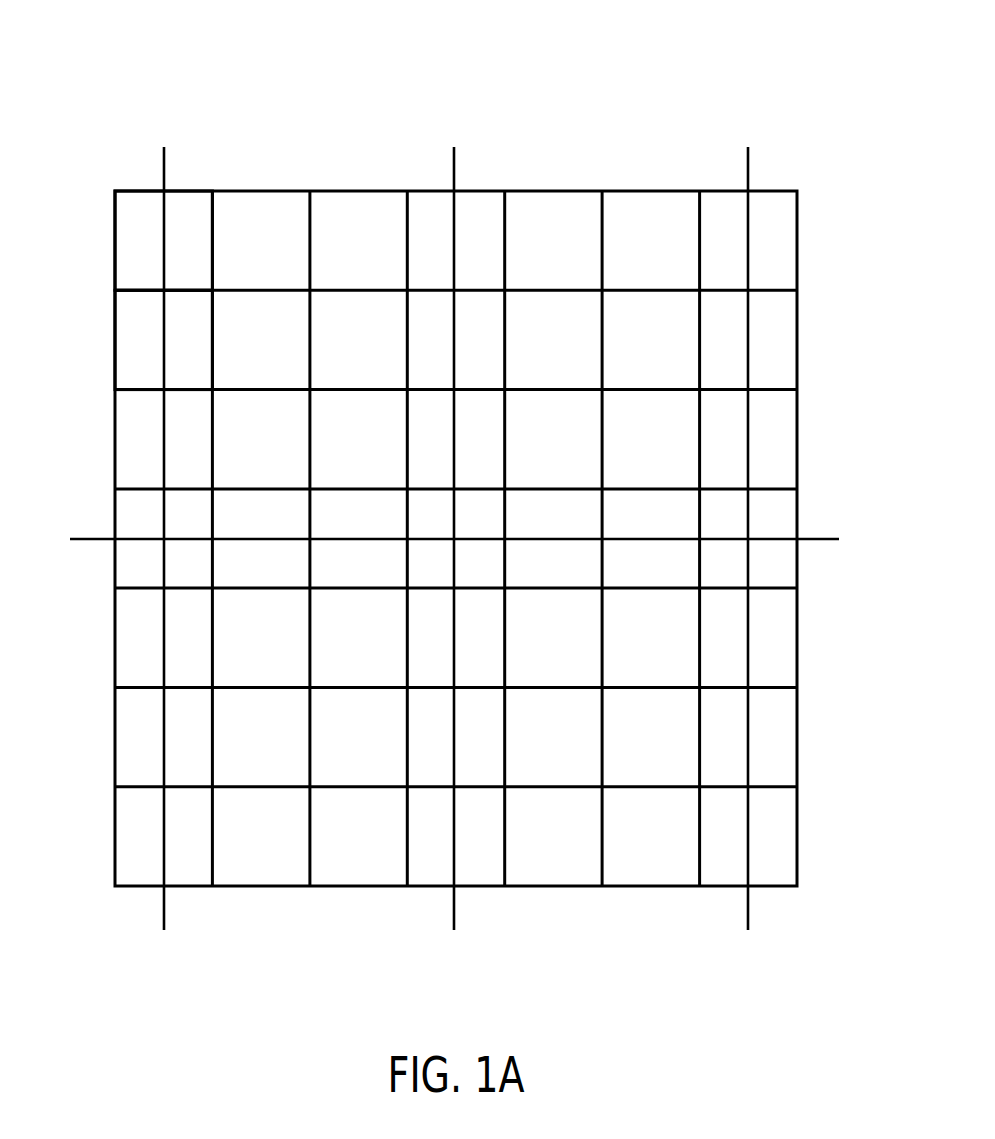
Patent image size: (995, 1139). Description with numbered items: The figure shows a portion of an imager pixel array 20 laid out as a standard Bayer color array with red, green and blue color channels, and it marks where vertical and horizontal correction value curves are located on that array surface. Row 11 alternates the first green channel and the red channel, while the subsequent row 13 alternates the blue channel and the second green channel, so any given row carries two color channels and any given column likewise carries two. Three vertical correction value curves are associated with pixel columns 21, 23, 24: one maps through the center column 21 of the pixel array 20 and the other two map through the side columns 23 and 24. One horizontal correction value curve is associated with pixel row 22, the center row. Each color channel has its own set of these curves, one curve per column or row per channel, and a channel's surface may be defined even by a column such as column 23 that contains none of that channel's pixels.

The imager pixel array 20 is at (827, 107).
The row 11 is at (127, 243).
The subsequent row 13 is at (127, 341).
The center column 21 is at (454, 515).
The pixel row 22 is at (431, 538).
The pixel column 23 is at (164, 515).
The pixel column 24 is at (748, 515).